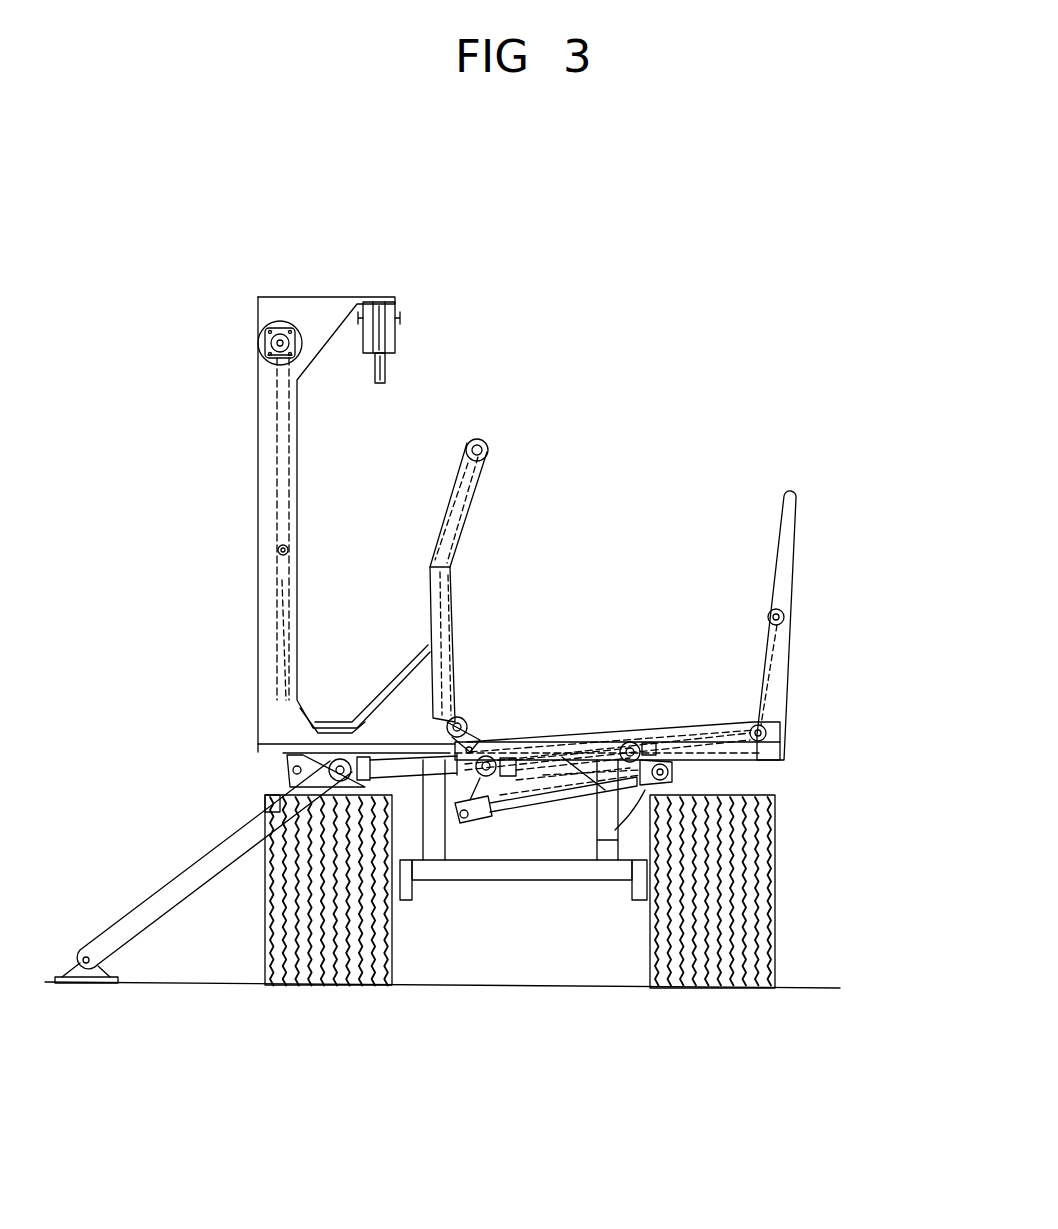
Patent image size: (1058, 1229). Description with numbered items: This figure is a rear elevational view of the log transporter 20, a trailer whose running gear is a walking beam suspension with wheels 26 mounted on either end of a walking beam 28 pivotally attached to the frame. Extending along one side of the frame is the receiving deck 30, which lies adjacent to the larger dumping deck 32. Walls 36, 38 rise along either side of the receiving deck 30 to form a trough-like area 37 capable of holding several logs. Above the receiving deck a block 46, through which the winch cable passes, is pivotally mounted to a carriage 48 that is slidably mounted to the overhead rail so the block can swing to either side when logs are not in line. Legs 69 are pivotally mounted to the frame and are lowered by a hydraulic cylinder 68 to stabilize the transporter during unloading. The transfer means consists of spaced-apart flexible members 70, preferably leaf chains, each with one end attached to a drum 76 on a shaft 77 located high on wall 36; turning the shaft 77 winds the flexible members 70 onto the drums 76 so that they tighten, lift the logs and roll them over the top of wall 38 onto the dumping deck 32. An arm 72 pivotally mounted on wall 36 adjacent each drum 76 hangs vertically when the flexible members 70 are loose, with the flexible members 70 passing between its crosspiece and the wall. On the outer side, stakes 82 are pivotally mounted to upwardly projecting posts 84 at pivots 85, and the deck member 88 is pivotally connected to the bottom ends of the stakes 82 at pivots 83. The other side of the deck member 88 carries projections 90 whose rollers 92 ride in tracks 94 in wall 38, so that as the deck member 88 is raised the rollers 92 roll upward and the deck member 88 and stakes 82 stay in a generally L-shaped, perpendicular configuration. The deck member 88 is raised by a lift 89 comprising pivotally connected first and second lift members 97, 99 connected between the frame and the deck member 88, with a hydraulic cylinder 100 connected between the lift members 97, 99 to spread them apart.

The log transporter 20 is at (606, 343).
The wheels 26 is at (290, 920).
The walking beam 28 is at (418, 905).
The receiving deck 30 is at (345, 724).
The dumping deck 32 is at (609, 572).
The wall 36 is at (258, 655).
The trough-like area 37 is at (318, 570).
The wall 38 is at (450, 492).
The block 46 is at (387, 373).
The carriage 48 is at (395, 338).
The hydraulic cylinder 68 is at (290, 784).
The legs 69 is at (200, 875).
The flexible members 70 is at (282, 588).
The arm 72 is at (292, 437).
The drum 76 is at (262, 335).
The shaft 77 is at (262, 352).
The stakes 82 is at (795, 510).
The pivots 83 is at (778, 748).
The posts 84 is at (780, 722).
The pivots 85 is at (781, 612).
The deck member 88 is at (733, 753).
The lift 89 is at (514, 830).
The projections 90 is at (585, 740).
The rollers 92 is at (462, 722).
The tracks 94 is at (440, 613).
The first lift member 97 is at (578, 790).
The second lift member 99 is at (455, 800).
The hydraulic cylinder 100 is at (660, 803).